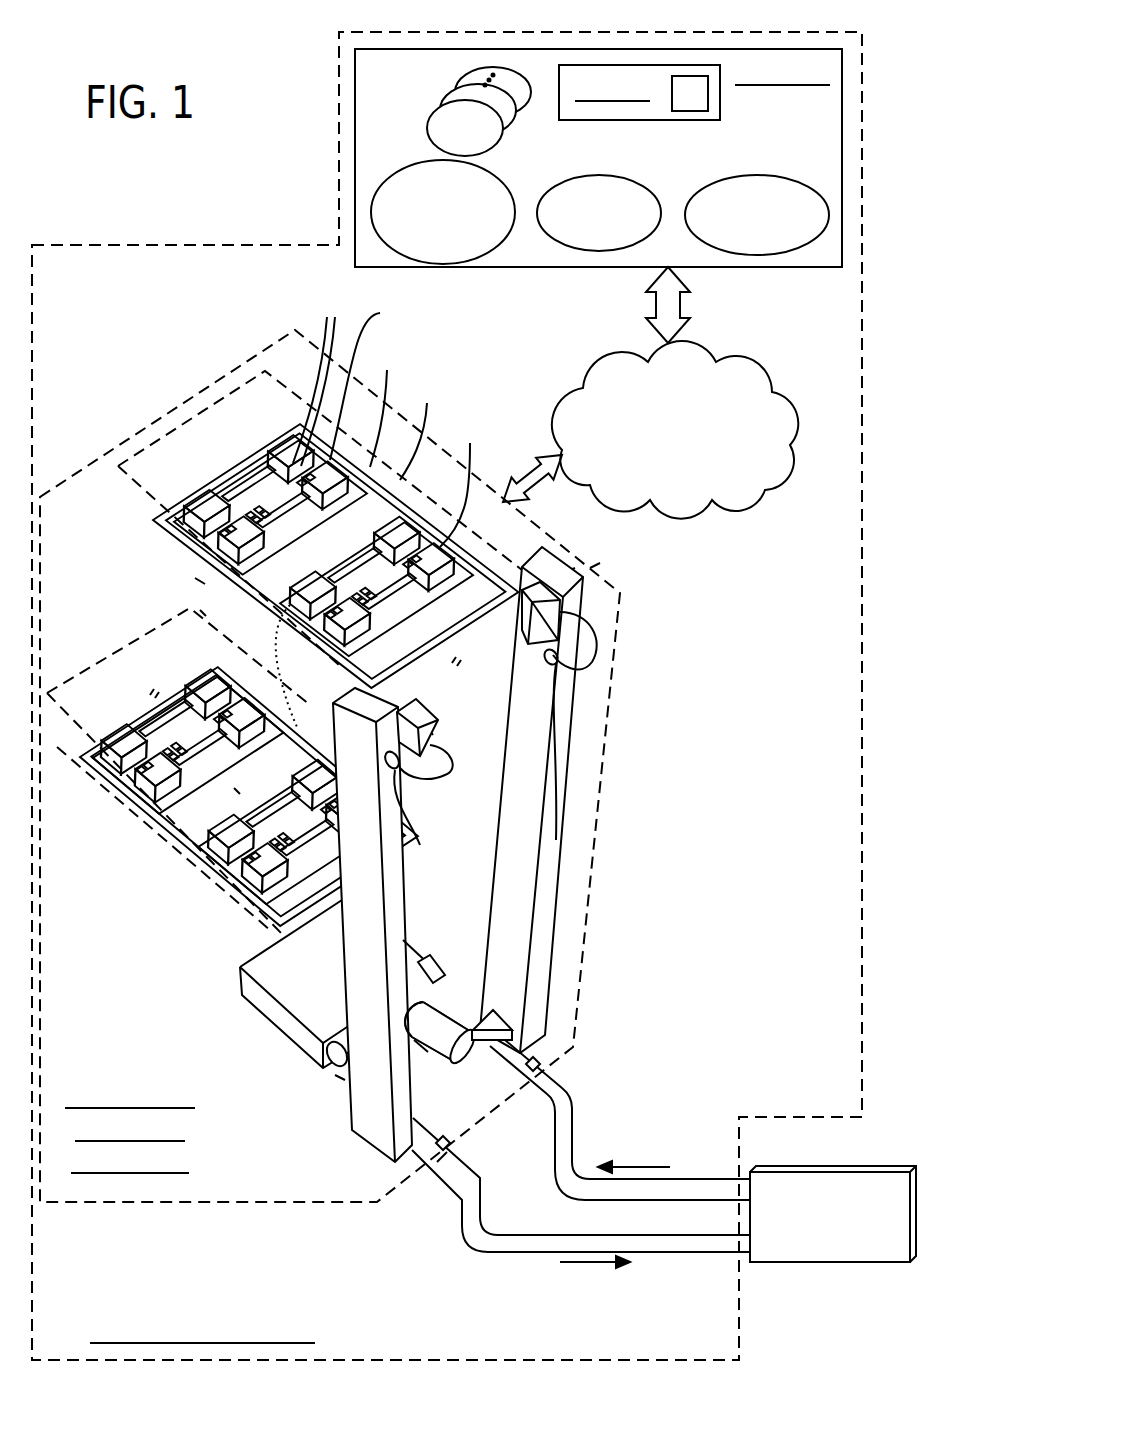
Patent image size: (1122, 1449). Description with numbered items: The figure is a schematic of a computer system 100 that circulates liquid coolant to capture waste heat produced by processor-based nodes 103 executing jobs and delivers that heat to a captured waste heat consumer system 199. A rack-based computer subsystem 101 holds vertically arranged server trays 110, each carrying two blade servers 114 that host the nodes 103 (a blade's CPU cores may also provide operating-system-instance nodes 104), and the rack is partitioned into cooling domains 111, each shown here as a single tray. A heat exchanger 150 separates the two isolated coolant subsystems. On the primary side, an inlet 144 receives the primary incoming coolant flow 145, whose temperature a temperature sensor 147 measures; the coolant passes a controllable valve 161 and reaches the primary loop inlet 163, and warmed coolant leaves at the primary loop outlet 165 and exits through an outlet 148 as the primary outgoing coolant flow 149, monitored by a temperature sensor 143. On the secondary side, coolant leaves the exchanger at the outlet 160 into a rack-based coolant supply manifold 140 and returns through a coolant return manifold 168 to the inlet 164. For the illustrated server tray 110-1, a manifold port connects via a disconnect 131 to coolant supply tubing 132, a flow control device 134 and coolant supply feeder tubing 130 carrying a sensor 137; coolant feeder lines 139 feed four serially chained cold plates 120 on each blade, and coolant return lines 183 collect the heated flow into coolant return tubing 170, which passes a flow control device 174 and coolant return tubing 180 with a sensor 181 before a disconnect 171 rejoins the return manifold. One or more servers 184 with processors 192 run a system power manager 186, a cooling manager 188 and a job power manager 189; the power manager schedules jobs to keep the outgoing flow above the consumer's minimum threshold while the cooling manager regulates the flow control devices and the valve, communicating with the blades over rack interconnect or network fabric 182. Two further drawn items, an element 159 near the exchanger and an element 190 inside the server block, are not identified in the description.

The computer system 100 is at (739, 1310).
The rack-based computer subsystem 101 is at (602, 775).
The node 103 is at (267, 357).
The node 104 is at (594, 566).
The server tray 110 is at (175, 838).
The server tray 110-1 is at (153, 523).
The cooling domain 111 is at (208, 393).
The blade server 114 is at (397, 560).
The cold plate 120 is at (97, 545).
The coolant supply feeder tubing 130 is at (388, 404).
The disconnect 131 is at (615, 630).
The coolant supply tubing 132 is at (595, 673).
The flow control device 134 is at (612, 598).
The sensor 137 is at (425, 428).
The coolant feeder line 139 is at (413, 423).
The coolant supply manifold 140 is at (570, 570).
The temperature sensor 143 is at (352, 1130).
The inlet 144 is at (547, 1107).
The primary incoming coolant flow 145 is at (677, 1097).
The temperature sensor 147 is at (537, 1067).
The outlet 148 is at (445, 1170).
The primary outgoing coolant flow 149 is at (487, 1300).
The heat exchanger 150 is at (263, 1003).
The coolant connector 159 is at (517, 1000).
The outlet 160 is at (463, 997).
The controllable valve 161 is at (427, 1050).
The primary loop inlet 163 is at (420, 987).
The inlet 164 is at (340, 1070).
The primary loop outlet 165 is at (343, 1077).
The coolant return manifold 168 is at (368, 1142).
The coolant return tubing 170 is at (453, 773).
The disconnect 171 is at (407, 810).
The flow control device 174 is at (430, 730).
The coolant return tubing 180 is at (200, 582).
The sensor 181 is at (503, 475).
The rack interconnect fabric and/or network fabric 182 is at (757, 503).
The coolant return line 183 is at (203, 613).
The server(s) 184 is at (603, 49).
The system power manager 186 is at (487, 172).
The cooling manager 188 is at (622, 180).
The job power manager 189 is at (755, 173).
The memory 190 is at (722, 100).
The processor 192 is at (413, 120).
The captured waste heat consumer system 199 is at (833, 1167).